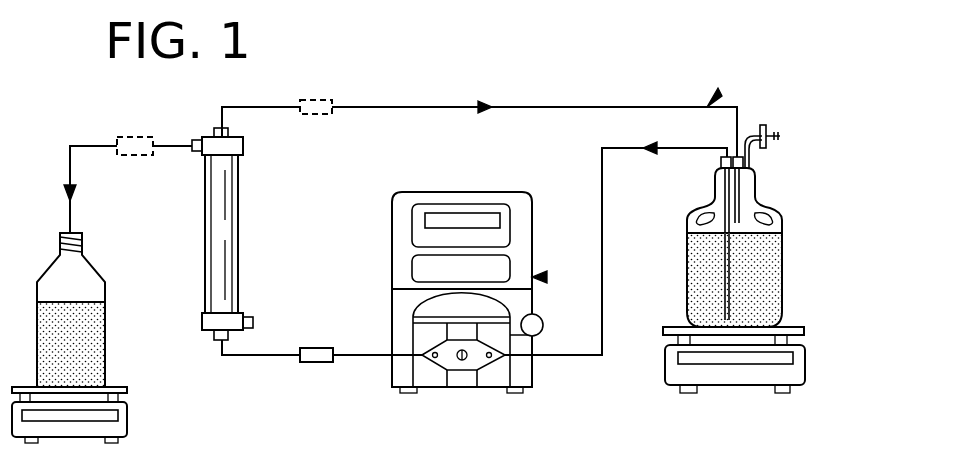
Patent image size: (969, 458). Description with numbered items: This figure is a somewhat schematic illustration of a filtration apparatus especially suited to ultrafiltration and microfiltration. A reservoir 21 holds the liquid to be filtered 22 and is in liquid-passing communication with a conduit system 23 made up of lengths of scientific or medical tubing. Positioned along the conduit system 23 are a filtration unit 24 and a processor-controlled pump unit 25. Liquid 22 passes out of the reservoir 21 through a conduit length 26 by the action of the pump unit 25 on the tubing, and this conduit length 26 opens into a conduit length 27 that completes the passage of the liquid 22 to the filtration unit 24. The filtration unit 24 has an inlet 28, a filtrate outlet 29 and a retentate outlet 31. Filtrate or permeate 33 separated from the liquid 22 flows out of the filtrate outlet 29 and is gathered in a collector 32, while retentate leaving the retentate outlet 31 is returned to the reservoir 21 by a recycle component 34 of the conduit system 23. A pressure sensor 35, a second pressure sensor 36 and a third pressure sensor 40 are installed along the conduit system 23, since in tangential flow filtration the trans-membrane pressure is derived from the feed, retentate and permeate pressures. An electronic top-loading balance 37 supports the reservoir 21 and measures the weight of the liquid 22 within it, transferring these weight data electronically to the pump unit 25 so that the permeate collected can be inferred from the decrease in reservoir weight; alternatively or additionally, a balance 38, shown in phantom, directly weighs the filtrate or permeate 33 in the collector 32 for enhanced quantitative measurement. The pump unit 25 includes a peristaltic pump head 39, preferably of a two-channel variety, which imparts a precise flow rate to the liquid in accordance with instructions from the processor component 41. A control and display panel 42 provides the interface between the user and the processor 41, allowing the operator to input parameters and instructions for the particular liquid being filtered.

The reservoir 21 is at (785, 215).
The liquid to be filtered 22 is at (757, 274).
The conduit system 23 is at (716, 92).
The filtration unit 24 is at (240, 240).
The processor-controlled pump unit 25 is at (547, 277).
The conduit length 26 is at (602, 232).
The conduit length 27 is at (275, 355).
The inlet 28 is at (212, 336).
The filtrate outlet 29 is at (200, 157).
The retentate outlet 31 is at (215, 130).
The collector 32 is at (105, 288).
The filtrate 33 is at (75, 335).
The recycle component 34 is at (432, 107).
The pressure sensor 35 is at (315, 348).
The second pressure sensor 36 is at (330, 100).
The electronic top-loading balance 37 is at (805, 363).
The balance 38 is at (128, 428).
The peristaltic pump head 39 is at (437, 363).
The third pressure sensor 40 is at (124, 137).
The processor component 41 is at (392, 255).
The control and display panel 42 is at (520, 245).